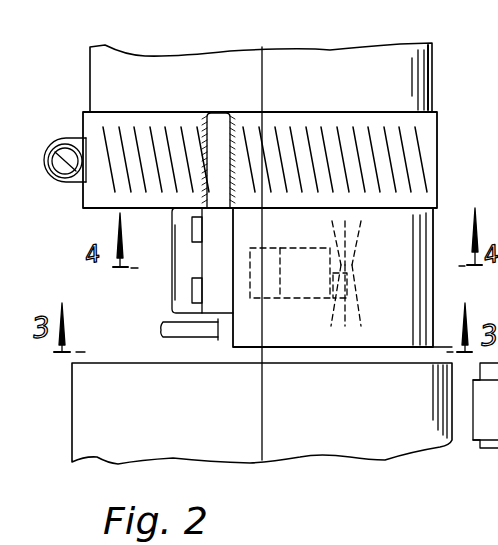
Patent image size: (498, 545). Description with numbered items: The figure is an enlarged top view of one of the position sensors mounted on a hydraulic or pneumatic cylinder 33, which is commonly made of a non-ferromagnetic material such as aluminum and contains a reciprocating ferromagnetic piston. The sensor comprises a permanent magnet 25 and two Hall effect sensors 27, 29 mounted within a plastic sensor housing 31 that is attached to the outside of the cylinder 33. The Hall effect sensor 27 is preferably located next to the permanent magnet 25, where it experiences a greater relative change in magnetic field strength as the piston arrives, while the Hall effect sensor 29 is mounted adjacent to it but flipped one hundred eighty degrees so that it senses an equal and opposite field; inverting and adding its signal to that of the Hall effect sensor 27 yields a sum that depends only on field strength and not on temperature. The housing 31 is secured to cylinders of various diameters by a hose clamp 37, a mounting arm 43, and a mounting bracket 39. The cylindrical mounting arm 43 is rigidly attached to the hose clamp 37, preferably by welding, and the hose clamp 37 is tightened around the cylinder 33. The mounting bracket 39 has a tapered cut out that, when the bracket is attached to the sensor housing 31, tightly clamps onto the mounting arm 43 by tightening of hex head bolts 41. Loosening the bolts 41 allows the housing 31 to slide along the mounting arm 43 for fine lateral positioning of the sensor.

The permanent magnet 25 is at (300, 284).
The Hall effect sensor 27 is at (346, 284).
The Hall effect sensor 29 is at (348, 264).
The sensor housing 31 is at (434, 234).
The cylinder 33 is at (436, 64).
The hose clamp 37 is at (428, 147).
The mounting bracket 39 is at (182, 297).
The hex head bolts 41 is at (188, 218).
The mounting arm 43 is at (218, 118).